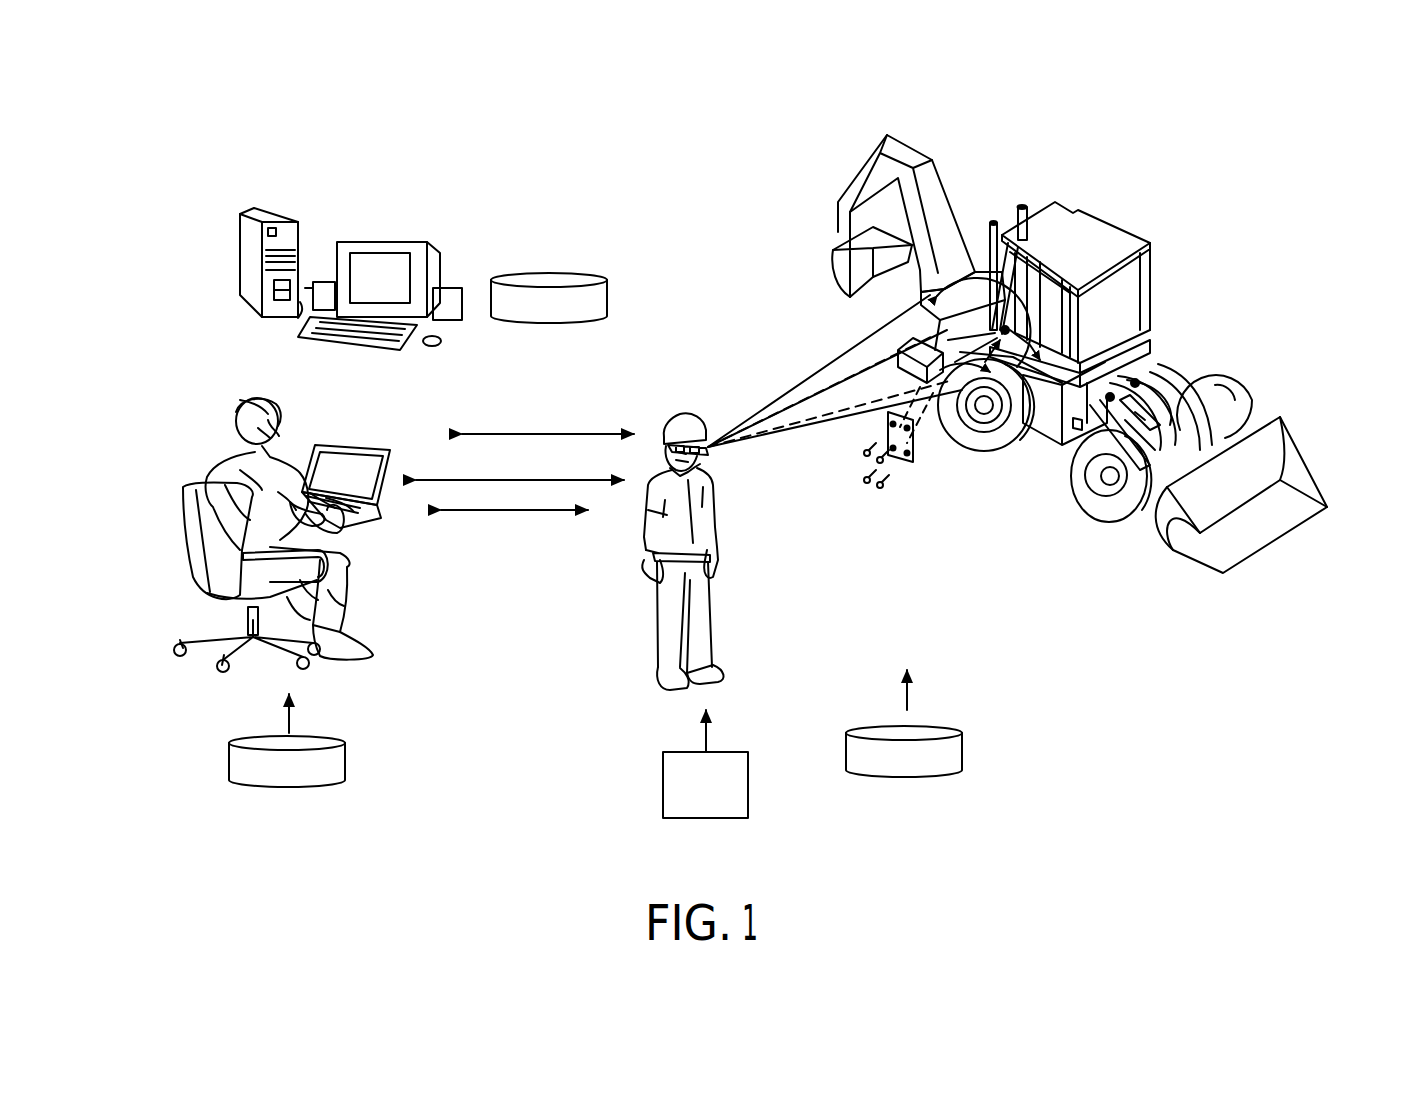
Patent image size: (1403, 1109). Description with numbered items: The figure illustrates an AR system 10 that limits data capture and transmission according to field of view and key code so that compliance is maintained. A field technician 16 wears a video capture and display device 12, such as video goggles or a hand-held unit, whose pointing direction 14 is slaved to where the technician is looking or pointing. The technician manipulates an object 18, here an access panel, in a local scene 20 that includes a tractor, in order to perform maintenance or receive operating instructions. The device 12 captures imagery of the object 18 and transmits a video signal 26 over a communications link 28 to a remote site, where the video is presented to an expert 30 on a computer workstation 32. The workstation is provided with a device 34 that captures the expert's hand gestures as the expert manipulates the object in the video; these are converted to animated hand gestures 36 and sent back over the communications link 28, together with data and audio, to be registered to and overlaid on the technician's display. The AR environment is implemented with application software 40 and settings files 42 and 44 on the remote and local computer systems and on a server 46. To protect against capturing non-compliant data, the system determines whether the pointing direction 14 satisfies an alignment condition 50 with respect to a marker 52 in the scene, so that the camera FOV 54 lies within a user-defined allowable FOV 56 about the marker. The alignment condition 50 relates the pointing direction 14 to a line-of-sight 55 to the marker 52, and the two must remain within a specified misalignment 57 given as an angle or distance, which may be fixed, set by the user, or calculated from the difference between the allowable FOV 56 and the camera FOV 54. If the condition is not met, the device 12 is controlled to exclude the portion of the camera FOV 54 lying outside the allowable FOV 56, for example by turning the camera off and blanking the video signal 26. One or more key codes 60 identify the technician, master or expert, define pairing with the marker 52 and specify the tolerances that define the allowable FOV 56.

The AR system 10 is at (650, 165).
The video capture and display device 12 is at (704, 448).
The pointing direction 14 is at (812, 410).
The field technician 16 is at (649, 543).
The object 18 is at (920, 440).
The local scene 20 is at (1196, 292).
The video signal 26 is at (514, 552).
The communications link 28 is at (520, 462).
The expert 30 is at (337, 590).
The computer workstation 32 is at (399, 458).
The device to capture hand gestures 34 is at (353, 442).
The animated hand gestures 36 is at (515, 402).
The application software 40 is at (536, 317).
The settings file 42 is at (274, 781).
The settings file 44 is at (891, 773).
The server 46 is at (290, 215).
The alignment condition 50 is at (975, 283).
The marker 52 is at (925, 300).
The camera FOV 54 is at (818, 390).
The line-of-sight 55 is at (857, 253).
The allowable FOV 56 is at (843, 357).
The misalignment 57 is at (1000, 338).
The key code 60 is at (662, 790).